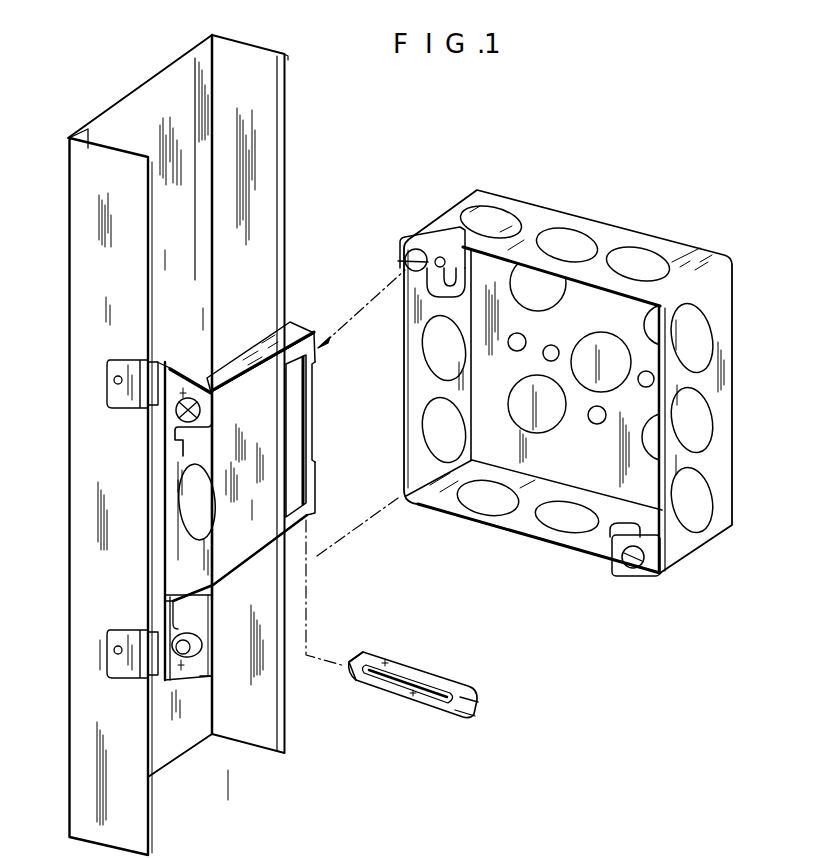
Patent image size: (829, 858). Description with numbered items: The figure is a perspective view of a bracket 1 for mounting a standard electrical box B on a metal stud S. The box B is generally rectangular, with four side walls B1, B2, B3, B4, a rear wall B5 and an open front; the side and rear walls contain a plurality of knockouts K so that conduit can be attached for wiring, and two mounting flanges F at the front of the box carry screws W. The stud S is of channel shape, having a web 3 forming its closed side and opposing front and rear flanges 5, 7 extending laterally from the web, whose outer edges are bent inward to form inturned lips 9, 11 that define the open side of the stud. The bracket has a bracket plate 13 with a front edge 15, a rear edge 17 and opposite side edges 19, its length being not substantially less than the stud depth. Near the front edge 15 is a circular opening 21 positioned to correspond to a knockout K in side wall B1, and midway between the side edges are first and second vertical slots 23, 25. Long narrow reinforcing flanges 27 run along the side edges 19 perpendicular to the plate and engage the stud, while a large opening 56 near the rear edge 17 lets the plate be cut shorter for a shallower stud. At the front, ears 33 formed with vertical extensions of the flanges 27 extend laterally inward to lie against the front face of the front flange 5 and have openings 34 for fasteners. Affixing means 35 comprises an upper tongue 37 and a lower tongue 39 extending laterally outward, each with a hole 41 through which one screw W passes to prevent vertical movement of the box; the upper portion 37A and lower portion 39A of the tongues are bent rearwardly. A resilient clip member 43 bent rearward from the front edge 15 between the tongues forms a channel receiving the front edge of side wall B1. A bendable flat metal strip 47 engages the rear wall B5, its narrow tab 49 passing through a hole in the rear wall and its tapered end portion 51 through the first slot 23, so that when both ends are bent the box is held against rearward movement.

The stud S is at (240, 42).
The bracket 1 is at (342, 250).
The web 3 is at (148, 100).
The front flange 5 is at (100, 164).
The rear flange 7 is at (262, 52).
The inturned lip 9 is at (152, 193).
The inturned lip 11 is at (283, 80).
The bracket plate 13 is at (214, 541).
The front edge 15 is at (163, 515).
The rear edge 17 is at (317, 368).
The side edges 19 is at (283, 347).
The circular opening 21 is at (297, 332).
The first vertical slot 23 is at (233, 498).
The second vertical slot 25 is at (258, 445).
The reinforcing flanges 27 is at (162, 632).
The ears 33 is at (118, 402).
The openings 34 is at (114, 380).
The affixing means 35 is at (173, 702).
The upper tongue 37 is at (172, 380).
The upper portion of upper tongue 37A is at (203, 382).
The lower tongue 39 is at (197, 678).
The lower portion of lower tongue 39A is at (204, 672).
The holes 41 is at (192, 418).
The clip member 43 is at (173, 542).
The bendable flat metal strip 47 is at (429, 696).
The tab 49 is at (445, 715).
The tapered end portion 51 is at (351, 662).
The opening 56 is at (297, 426).
The electrical box B is at (564, 401).
The side wall B1 is at (417, 382).
The side wall B2 is at (543, 222).
The side wall B3 is at (718, 425).
The side wall B4 is at (583, 542).
The rear wall B5 is at (573, 465).
The mounting flanges F is at (430, 252).
The knockouts K is at (613, 255).
The screws W is at (405, 262).